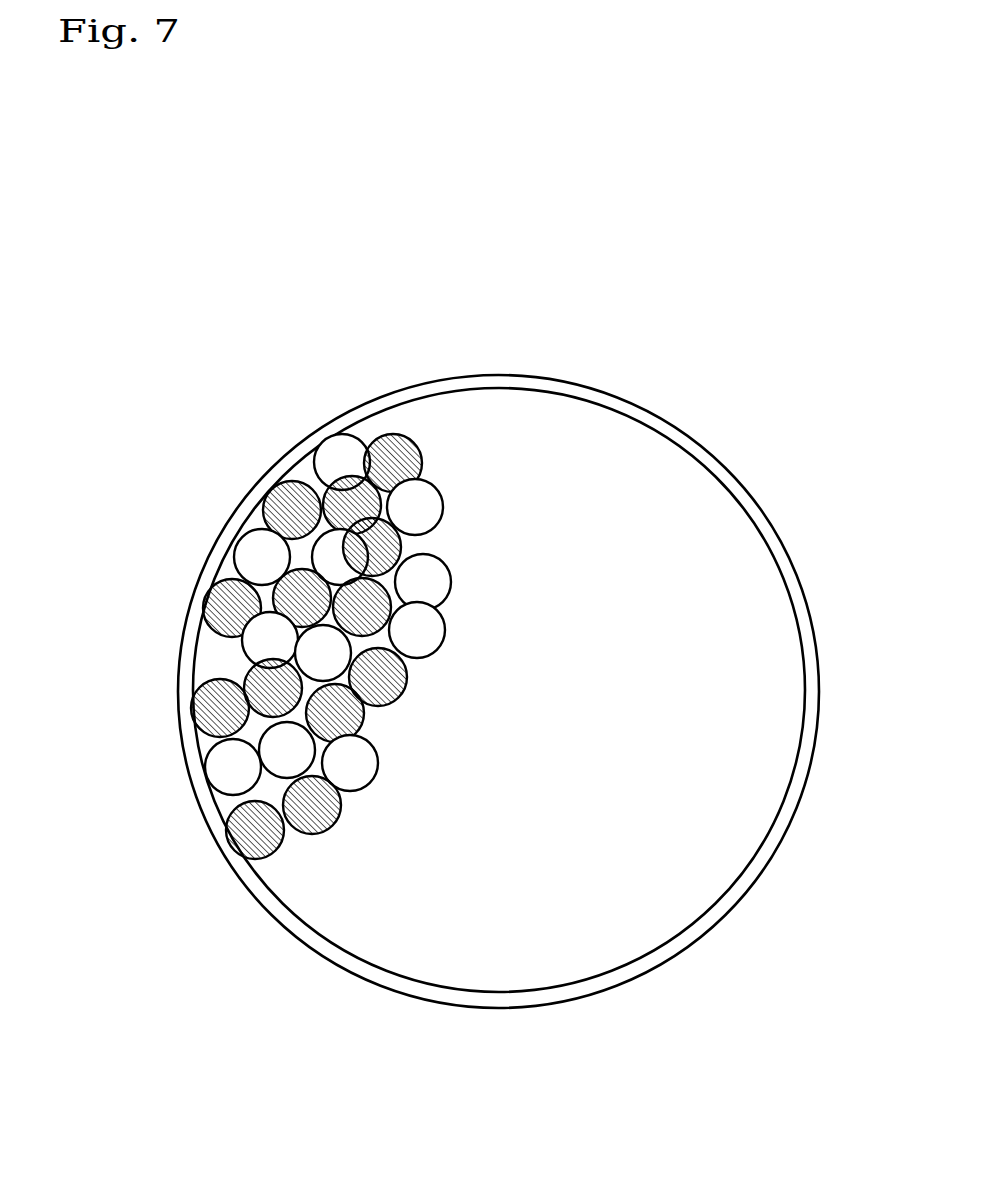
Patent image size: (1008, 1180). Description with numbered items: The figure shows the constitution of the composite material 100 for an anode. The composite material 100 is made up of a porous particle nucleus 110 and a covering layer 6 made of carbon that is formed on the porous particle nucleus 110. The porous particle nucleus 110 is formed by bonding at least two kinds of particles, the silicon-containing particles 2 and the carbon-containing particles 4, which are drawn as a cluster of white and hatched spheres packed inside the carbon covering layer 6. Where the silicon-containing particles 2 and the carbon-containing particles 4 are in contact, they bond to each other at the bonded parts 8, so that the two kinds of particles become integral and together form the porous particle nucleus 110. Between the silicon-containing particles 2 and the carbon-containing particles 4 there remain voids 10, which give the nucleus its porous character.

The composite material for anode 100 is at (471, 685).
The porous particle nucleus 110 is at (330, 536).
The silicon-containing particles 2 is at (233, 770).
The carbon-containing particles 4 is at (292, 508).
The covering layer 6 is at (236, 860).
The bonded parts 8 is at (200, 655).
The voids 10 is at (300, 556).